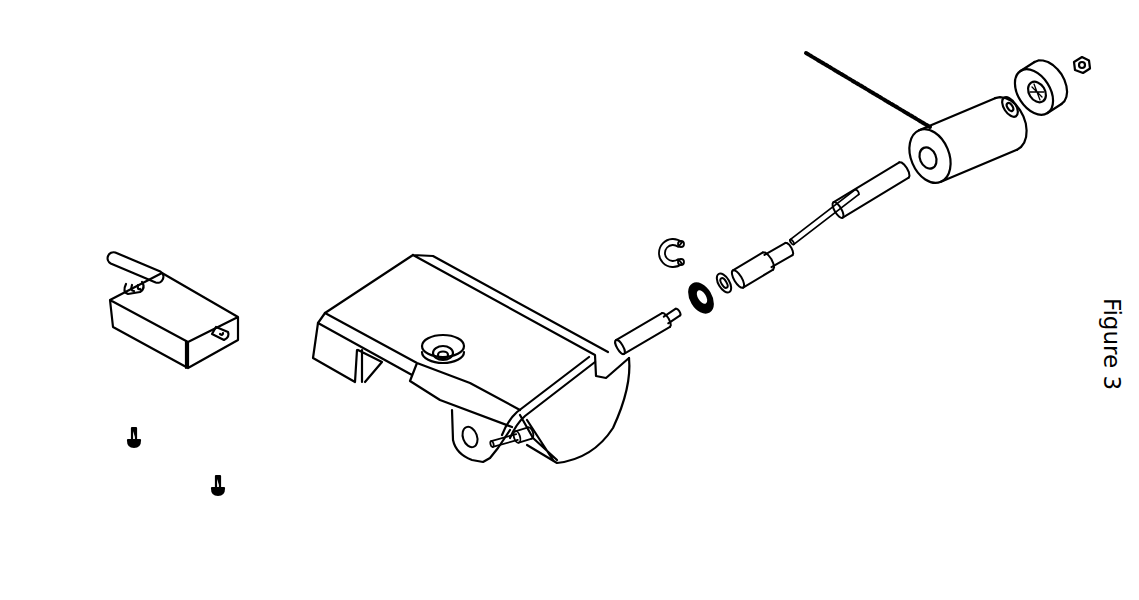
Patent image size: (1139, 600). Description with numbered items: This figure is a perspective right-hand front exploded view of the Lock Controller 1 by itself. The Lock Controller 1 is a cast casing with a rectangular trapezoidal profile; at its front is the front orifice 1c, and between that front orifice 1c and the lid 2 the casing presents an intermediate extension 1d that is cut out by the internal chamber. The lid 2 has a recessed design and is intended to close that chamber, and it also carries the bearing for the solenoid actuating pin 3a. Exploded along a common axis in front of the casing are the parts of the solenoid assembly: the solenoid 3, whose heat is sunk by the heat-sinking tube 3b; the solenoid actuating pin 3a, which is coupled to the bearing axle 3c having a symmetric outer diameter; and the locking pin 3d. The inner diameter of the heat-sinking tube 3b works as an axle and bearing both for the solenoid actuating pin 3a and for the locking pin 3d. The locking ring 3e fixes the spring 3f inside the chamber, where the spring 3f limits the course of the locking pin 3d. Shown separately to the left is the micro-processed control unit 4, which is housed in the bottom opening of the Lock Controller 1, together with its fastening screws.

The Lock Controller 1 is at (405, 290).
The front orifice 1c is at (472, 442).
The intermediate extension 1d is at (485, 462).
The lid 2 is at (1027, 68).
The solenoid 3 is at (953, 108).
The solenoid actuating pin 3a is at (810, 223).
The heat-sinking tube 3b is at (857, 187).
The bearing axle 3c is at (753, 273).
The locking pin 3d is at (637, 327).
The locking ring 3e is at (667, 238).
The spring 3f is at (703, 317).
The micro-processed control unit 4 is at (178, 297).